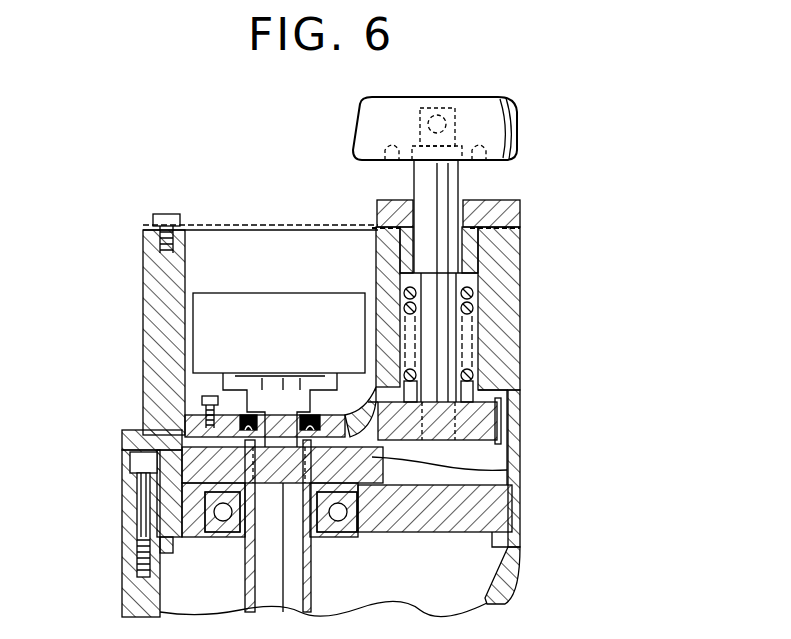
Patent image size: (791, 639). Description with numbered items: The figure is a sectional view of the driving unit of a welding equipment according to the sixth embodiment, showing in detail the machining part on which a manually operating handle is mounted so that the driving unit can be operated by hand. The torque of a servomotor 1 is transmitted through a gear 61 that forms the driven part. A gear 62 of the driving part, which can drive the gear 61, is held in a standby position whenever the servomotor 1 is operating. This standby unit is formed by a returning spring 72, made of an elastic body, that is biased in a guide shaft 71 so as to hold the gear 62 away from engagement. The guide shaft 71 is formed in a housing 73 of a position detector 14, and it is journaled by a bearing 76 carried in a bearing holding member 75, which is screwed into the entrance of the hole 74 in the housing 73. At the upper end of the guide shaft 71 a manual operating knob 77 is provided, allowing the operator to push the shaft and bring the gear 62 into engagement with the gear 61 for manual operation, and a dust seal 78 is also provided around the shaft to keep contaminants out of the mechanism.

The servomotor 1 is at (106, 522).
The position detector 14 is at (217, 338).
The gear 61 is at (470, 471).
The gear 62 is at (498, 421).
The guide shaft 71 is at (442, 339).
The returning spring 72 is at (469, 380).
The housing 73 is at (160, 388).
The hole 74 is at (468, 318).
The bearing holding member 75 is at (521, 211).
The bearing 76 is at (477, 262).
The manual operating knob 77 is at (510, 131).
The dust seal 78 is at (471, 193).